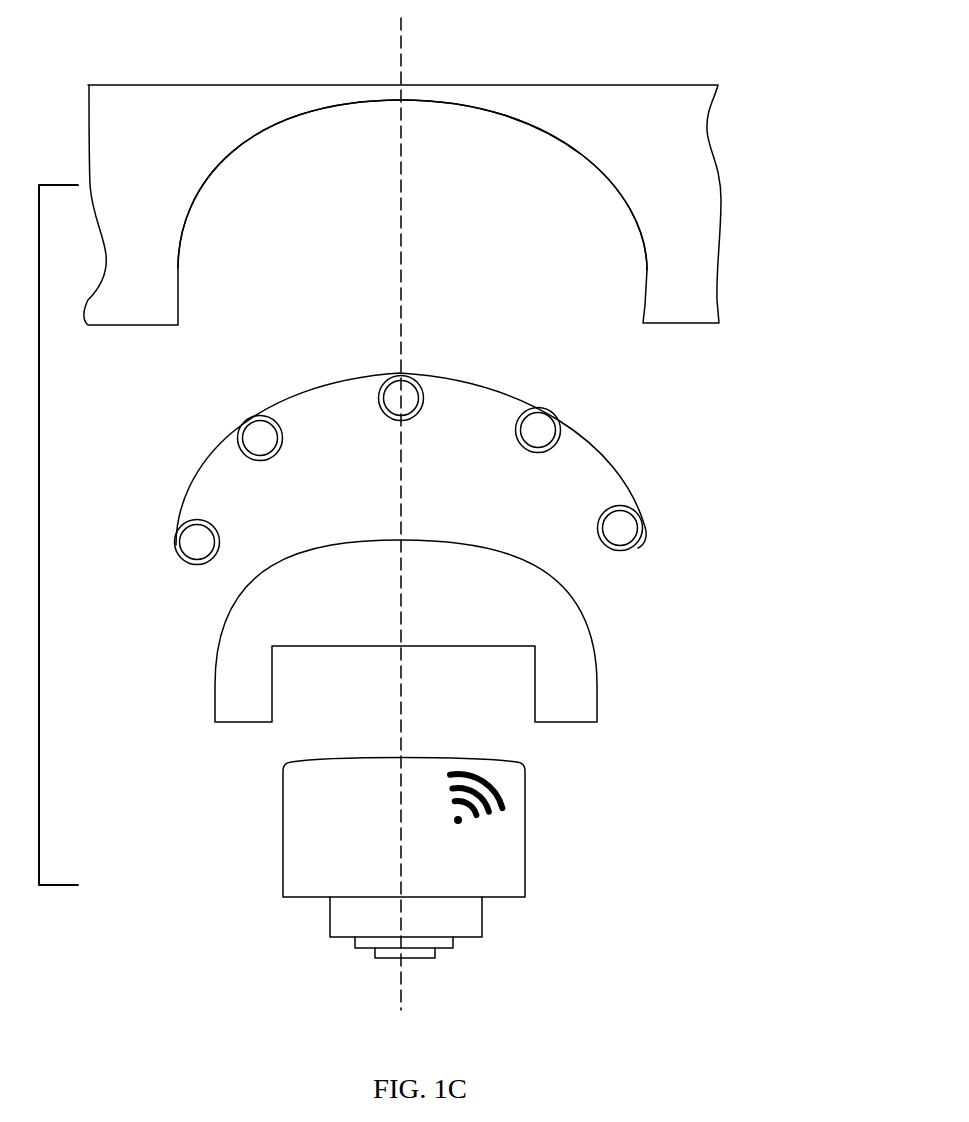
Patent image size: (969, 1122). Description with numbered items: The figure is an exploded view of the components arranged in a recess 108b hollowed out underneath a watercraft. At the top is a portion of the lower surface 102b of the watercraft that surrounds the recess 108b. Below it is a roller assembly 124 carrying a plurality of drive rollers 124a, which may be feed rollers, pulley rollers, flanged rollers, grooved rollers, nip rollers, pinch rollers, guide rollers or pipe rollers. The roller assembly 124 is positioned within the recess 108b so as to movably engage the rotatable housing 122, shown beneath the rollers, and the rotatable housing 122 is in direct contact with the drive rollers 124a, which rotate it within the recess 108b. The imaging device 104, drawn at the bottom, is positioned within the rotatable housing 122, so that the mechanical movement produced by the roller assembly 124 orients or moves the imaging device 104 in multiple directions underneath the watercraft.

The lower surface 102b is at (697, 322).
The recess 108b is at (523, 115).
The roller assembly 124 is at (500, 391).
The drive rollers 124a is at (219, 537).
The rotatable housing 122 is at (593, 658).
The imaging device 104 is at (523, 863).